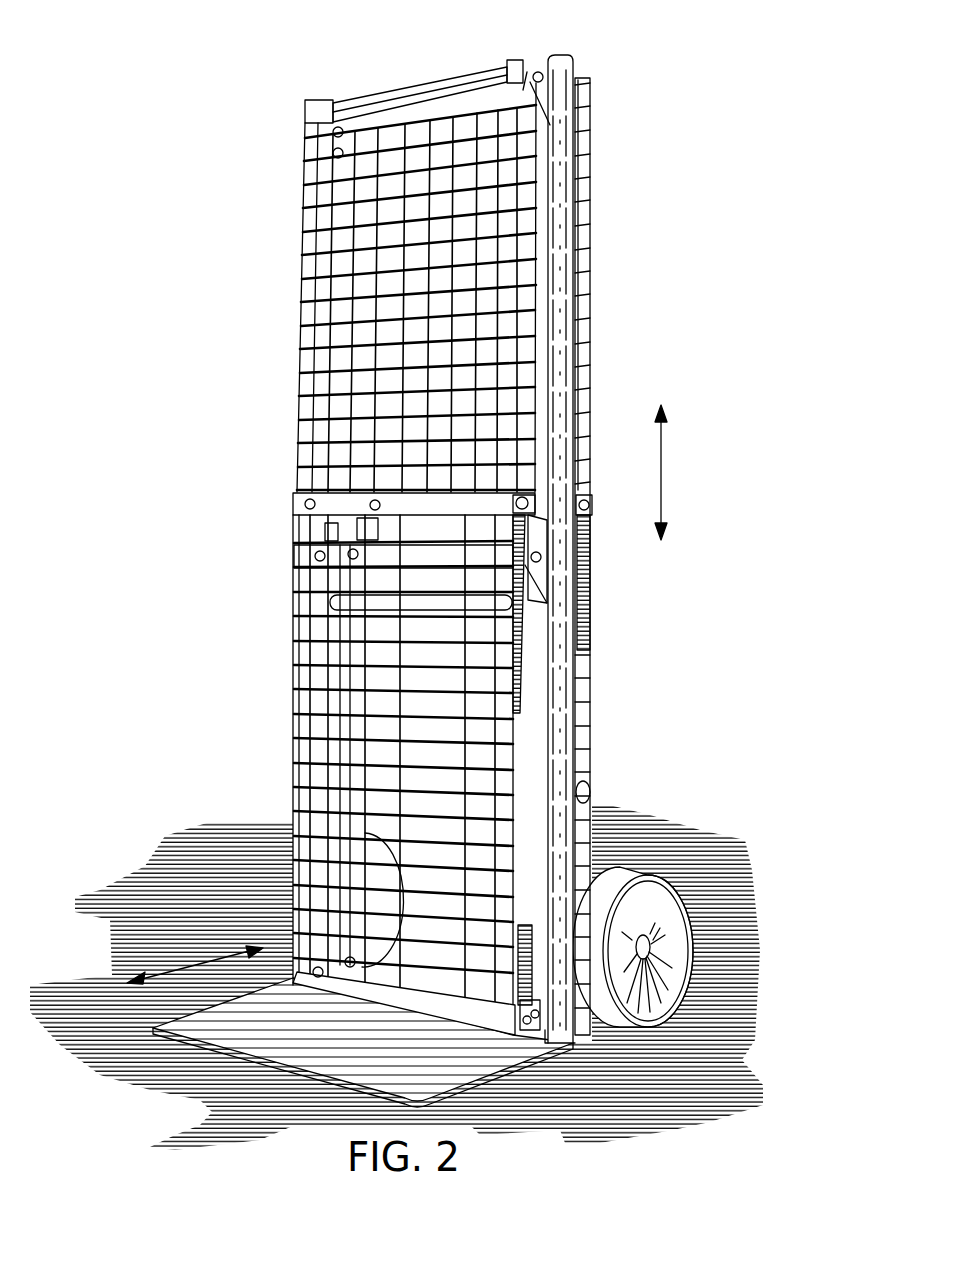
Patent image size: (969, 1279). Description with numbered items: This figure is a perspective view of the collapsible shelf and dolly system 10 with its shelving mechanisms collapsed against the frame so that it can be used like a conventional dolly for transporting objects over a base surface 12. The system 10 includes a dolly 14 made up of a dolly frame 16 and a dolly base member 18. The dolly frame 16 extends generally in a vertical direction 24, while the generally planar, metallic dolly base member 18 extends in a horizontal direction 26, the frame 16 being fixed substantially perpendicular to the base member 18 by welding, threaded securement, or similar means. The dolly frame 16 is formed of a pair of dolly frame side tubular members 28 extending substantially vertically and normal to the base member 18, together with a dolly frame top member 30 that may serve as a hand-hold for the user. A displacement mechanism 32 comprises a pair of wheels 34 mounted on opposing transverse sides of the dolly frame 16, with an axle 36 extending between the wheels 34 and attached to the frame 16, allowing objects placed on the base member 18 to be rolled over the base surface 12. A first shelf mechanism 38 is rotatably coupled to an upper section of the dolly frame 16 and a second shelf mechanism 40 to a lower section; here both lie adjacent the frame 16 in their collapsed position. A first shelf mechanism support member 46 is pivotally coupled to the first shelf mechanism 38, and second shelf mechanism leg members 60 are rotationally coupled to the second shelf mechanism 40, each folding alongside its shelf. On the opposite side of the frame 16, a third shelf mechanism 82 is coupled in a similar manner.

The collapsible shelf and dolly system 10 is at (413, 594).
The base surface 12 is at (720, 950).
The dolly 14 is at (578, 328).
The dolly frame 16 is at (633, 556).
The dolly base member 18 is at (490, 1078).
The vertical direction 24 is at (661, 470).
The horizontal direction 26 is at (182, 967).
The dolly frame side tubular member 28 is at (563, 238).
The dolly frame top member 30 is at (555, 58).
The displacement mechanism 32 is at (684, 920).
The wheel 34 is at (690, 980).
The axle 36 is at (647, 963).
The first shelf mechanism 38 is at (295, 268).
The second shelf mechanism 40 is at (421, 764).
The first shelf mechanism support member 46 is at (522, 695).
The second shelf mechanism leg member 60 is at (330, 652).
The third shelf mechanism 82 is at (578, 175).